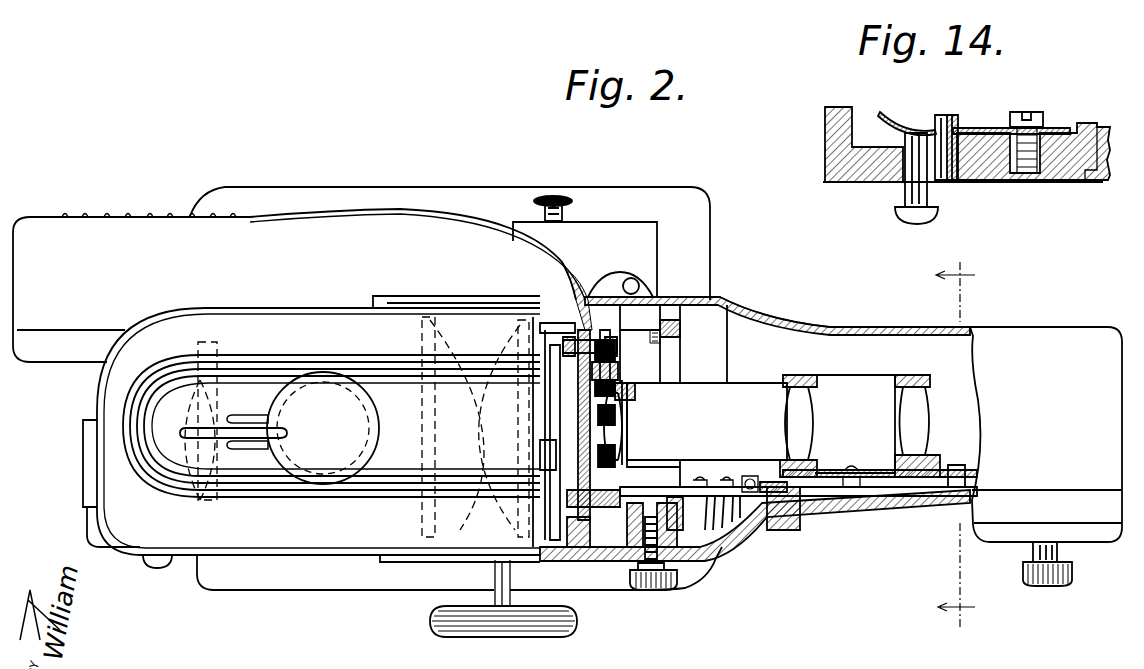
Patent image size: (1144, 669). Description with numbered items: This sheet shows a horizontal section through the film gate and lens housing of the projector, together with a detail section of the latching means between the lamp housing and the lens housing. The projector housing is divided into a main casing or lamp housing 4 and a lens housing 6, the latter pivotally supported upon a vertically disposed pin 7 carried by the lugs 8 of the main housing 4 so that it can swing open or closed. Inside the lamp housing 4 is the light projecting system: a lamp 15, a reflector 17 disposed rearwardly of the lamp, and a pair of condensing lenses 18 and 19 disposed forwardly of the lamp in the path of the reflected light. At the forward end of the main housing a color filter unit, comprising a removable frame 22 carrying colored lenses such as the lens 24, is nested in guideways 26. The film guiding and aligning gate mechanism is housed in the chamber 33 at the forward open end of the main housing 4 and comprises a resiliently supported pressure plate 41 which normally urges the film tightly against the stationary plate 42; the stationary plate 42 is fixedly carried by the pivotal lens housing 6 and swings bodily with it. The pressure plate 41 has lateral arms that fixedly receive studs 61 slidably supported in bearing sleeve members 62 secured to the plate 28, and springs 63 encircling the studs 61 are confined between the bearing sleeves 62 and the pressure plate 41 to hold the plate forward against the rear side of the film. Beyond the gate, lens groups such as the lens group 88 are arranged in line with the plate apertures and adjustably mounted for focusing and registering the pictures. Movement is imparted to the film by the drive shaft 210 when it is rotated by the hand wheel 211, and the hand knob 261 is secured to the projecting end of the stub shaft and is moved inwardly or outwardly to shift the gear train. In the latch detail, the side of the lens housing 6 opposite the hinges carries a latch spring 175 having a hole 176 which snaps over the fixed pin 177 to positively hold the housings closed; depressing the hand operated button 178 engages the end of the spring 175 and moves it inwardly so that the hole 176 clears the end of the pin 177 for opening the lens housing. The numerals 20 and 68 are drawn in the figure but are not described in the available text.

In FIG. 2, the main casing or lamp housing 4 is at (323, 541).
In FIG. 14, the main casing or lamp housing 4 is at (853, 182).
In FIG. 2, the lens housing 6 is at (850, 315).
In FIG. 14, the lens housing 6 is at (1005, 180).
In FIG. 2, the vertically disposed pin 7 is at (637, 277).
In FIG. 2, the lugs 8 is at (614, 279).
In FIG. 2, the lamp 15 is at (323, 384).
In FIG. 2, the reflector 17 is at (178, 503).
In FIG. 2, the condensing lens 18 is at (432, 510).
In FIG. 2, the condensing lens 19 is at (512, 510).
In FIG. 2, the lens barrel 20 is at (641, 412).
In FIG. 2, the removable frame 22 is at (618, 373).
In FIG. 2, the colored lens 24 is at (614, 433).
In FIG. 2, the guideways 26 is at (630, 373).
In FIG. 2, the plate 28 is at (543, 455).
In FIG. 2, the chamber 33 is at (607, 545).
In FIG. 2, the pressure plate 41 is at (626, 478).
In FIG. 2, the stationary plate 42 is at (633, 388).
In FIG. 2, the studs 61 is at (620, 376).
In FIG. 2, the bearing sleeve members 62 is at (508, 328).
In FIG. 2, the springs 63 is at (601, 337).
In FIG. 2, the link 68 is at (543, 332).
In FIG. 2, the lens group 88 is at (852, 382).
In FIG. 14, the latch spring 175 is at (990, 126).
In FIG. 14, the hole 176 is at (933, 120).
In FIG. 14, the fixed pin 177 is at (950, 115).
In FIG. 14, the hand operated button 178 is at (905, 222).
In FIG. 2, the drive shaft 210 is at (500, 575).
In FIG. 2, the hand wheel 211 is at (506, 638).
In FIG. 2, the hand knob 261 is at (551, 194).